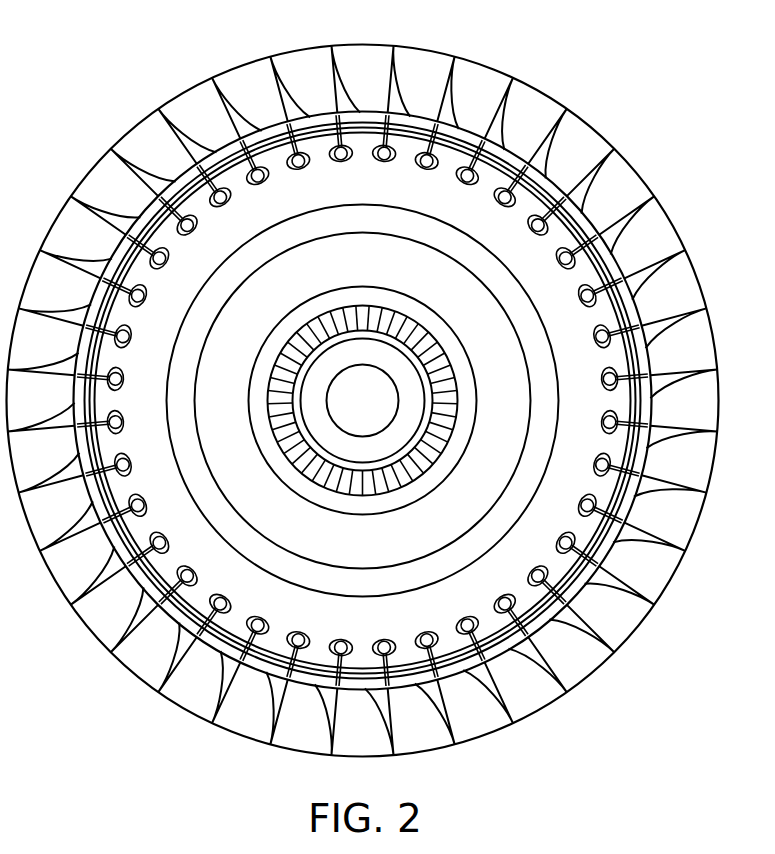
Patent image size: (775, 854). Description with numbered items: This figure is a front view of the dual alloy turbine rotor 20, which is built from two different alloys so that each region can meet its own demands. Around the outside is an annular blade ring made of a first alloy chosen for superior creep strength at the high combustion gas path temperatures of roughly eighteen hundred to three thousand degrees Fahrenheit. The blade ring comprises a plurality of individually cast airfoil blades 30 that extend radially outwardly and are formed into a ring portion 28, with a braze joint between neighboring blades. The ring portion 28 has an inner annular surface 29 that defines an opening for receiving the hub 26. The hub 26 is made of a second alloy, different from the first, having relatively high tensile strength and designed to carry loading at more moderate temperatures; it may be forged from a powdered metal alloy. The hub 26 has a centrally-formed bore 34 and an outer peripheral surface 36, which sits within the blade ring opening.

The dual alloy turbine rotor 20 is at (93, 707).
The hub 26 is at (375, 196).
The ring portion 28 is at (633, 347).
The inner annular surface 29 is at (630, 304).
The airfoil blades 30 is at (702, 340).
The centrally-formed bore 34 is at (380, 410).
The outer peripheral surface 36 is at (632, 287).